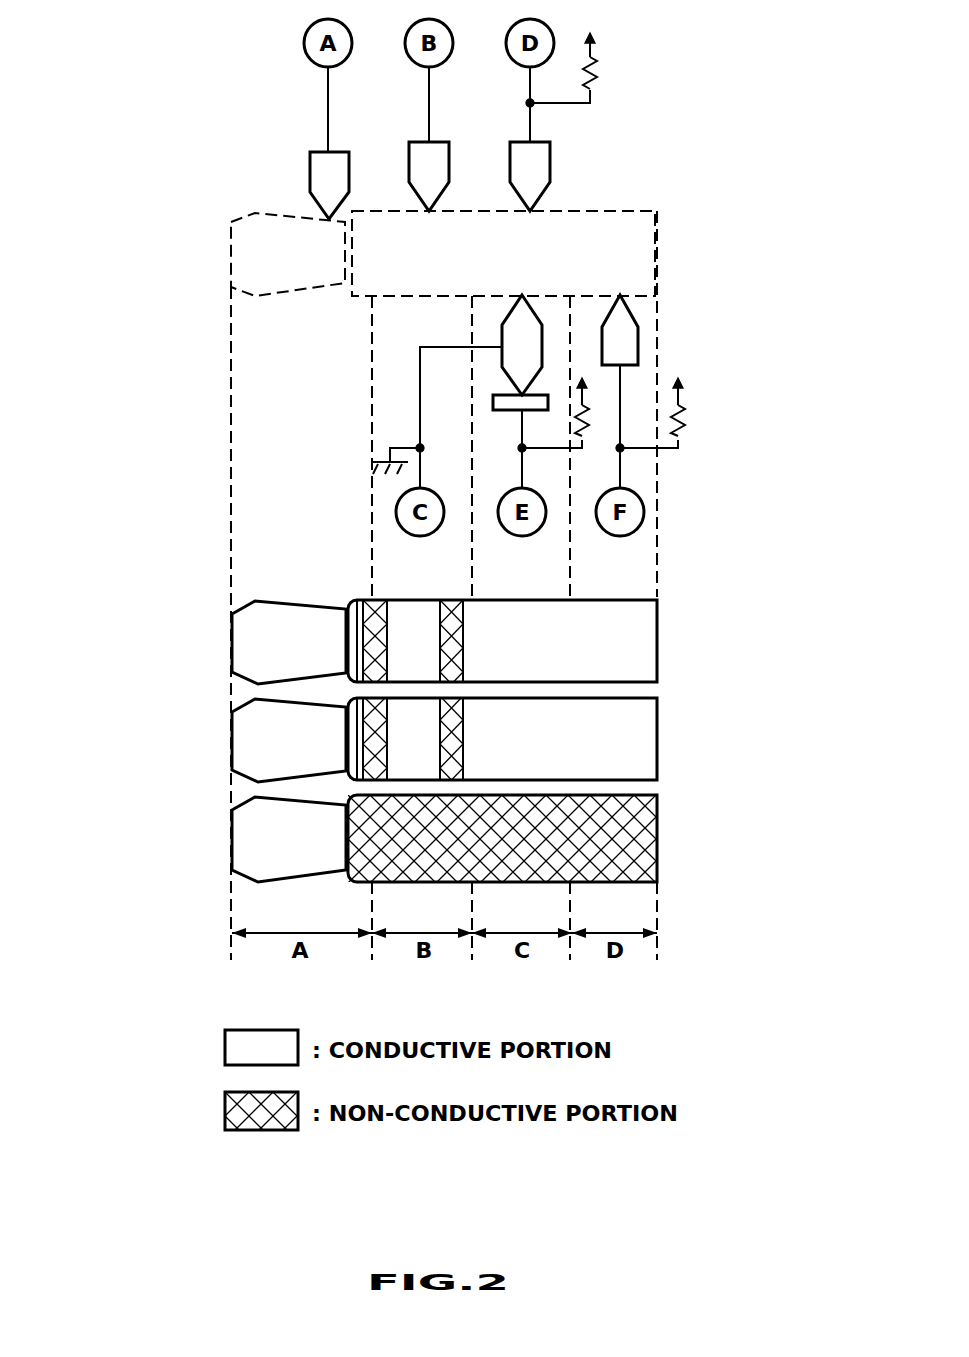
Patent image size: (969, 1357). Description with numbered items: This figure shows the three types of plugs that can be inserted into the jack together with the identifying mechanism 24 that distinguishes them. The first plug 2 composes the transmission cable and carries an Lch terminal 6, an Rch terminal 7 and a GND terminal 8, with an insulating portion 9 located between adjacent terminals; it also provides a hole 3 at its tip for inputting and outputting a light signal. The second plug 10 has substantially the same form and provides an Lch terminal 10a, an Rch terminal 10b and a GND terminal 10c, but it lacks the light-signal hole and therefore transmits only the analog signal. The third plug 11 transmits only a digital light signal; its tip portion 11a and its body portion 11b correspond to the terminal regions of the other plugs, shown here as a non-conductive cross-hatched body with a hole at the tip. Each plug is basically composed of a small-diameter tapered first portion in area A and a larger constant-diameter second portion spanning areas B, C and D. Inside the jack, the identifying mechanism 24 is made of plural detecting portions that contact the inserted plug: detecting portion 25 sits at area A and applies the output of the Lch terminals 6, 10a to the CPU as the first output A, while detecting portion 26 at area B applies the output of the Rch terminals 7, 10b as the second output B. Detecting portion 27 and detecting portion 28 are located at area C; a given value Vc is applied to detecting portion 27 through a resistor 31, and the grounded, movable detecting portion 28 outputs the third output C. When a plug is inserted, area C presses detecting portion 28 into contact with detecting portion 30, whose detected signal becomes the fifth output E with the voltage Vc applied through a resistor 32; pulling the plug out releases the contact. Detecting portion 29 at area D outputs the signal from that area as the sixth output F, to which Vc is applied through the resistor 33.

The first plug 2 is at (476, 609).
The hole 3 is at (232, 638).
The Lch terminal 6 is at (262, 620).
The Rch terminal 7 is at (417, 612).
The GND terminal 8 is at (508, 618).
The insulating portion 9 is at (382, 693).
The second plug 10 is at (449, 713).
The Lch terminal 10a is at (255, 712).
The Rch terminal 10b is at (407, 772).
The GND terminal 10c is at (623, 758).
The third plug 11 is at (465, 880).
The tip portion of non-conductive plug 11a is at (263, 832).
The non-conductive body portion 11b is at (647, 858).
The identifying mechanism 24 is at (645, 190).
The detecting portion 25 is at (322, 176).
The detecting portion 26 is at (425, 160).
The detecting portion 27 is at (530, 170).
The detecting portion 28 is at (518, 328).
The detecting portion 29 is at (610, 333).
The detecting portion 30 is at (512, 405).
The resistor 31 is at (600, 78).
The resistor 32 is at (592, 423).
The resistor 33 is at (690, 418).